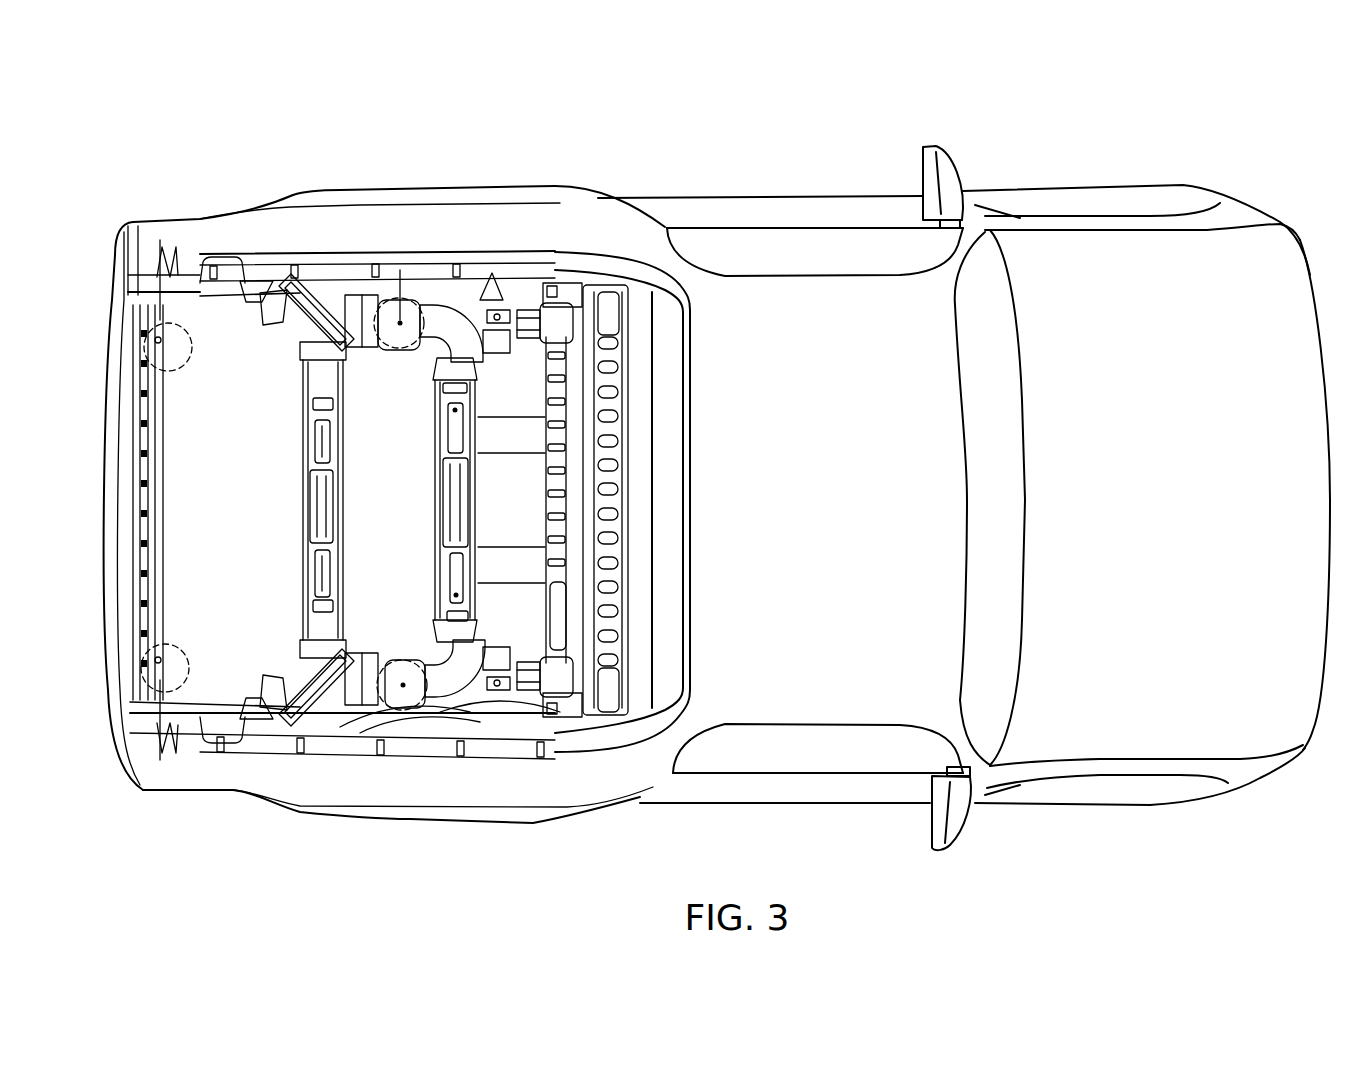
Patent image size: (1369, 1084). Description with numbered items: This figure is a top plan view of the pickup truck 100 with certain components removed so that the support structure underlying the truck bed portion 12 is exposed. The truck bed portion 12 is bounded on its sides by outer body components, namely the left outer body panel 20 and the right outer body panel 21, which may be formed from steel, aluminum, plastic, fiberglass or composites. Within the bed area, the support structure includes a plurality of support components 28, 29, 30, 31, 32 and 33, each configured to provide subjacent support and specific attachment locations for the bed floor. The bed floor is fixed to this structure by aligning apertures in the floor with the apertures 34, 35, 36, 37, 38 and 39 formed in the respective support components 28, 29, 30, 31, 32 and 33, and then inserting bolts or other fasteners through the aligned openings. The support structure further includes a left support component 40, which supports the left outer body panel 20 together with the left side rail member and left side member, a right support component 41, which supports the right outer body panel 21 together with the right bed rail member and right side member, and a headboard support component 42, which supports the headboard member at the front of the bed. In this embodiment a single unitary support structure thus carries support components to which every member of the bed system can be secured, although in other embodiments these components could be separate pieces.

The pickup truck 100 is at (1018, 150).
The truck bed portion 12 is at (522, 152).
The left outer body panel 20 is at (333, 228).
The right outer body panel 21 is at (338, 783).
The support component 28 is at (563, 297).
The support component 29 is at (420, 252).
The support component 30 is at (177, 273).
The support component 31 is at (590, 755).
The support component 32 is at (404, 692).
The support component 33 is at (143, 790).
The aperture 34 is at (532, 350).
The aperture 35 is at (400, 332).
The aperture 36 is at (172, 352).
The aperture 37 is at (533, 657).
The aperture 38 is at (403, 682).
The aperture 39 is at (170, 655).
The left support component 40 is at (280, 293).
The right support component 41 is at (287, 717).
The headboard support component 42 is at (613, 503).